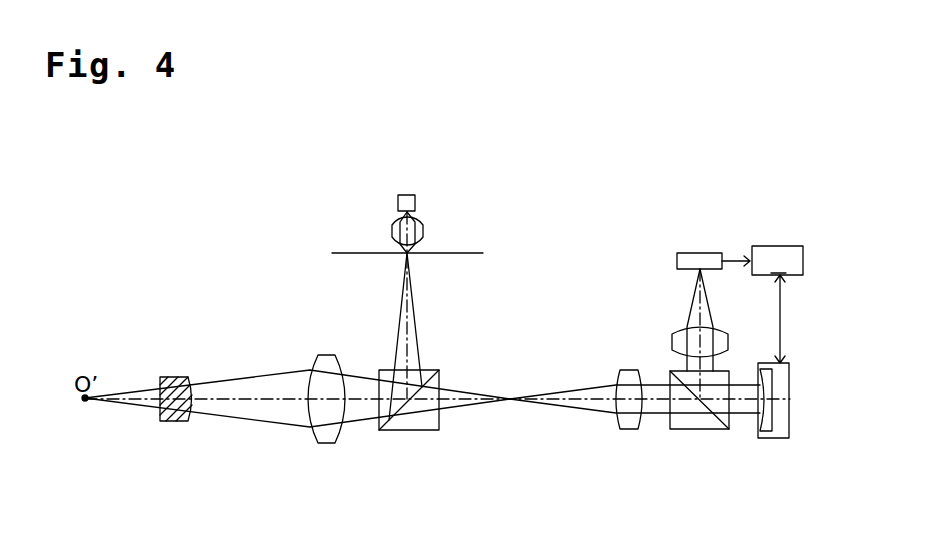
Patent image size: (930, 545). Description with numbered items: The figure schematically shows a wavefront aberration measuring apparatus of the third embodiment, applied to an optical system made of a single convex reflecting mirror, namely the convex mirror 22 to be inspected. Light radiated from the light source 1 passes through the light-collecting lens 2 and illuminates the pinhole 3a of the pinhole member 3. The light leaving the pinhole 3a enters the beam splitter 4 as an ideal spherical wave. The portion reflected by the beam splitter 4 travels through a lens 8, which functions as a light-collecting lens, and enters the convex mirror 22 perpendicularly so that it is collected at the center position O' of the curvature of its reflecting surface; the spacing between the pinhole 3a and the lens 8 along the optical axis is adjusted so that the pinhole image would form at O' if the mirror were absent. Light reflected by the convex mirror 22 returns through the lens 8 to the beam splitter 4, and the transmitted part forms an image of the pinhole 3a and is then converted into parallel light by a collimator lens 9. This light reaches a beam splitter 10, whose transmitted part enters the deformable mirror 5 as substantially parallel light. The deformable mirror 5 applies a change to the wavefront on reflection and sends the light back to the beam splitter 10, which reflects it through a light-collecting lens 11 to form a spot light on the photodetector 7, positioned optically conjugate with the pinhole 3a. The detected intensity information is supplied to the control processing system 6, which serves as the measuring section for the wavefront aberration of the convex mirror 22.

The light source 1 is at (397, 202).
The light-collecting lens 2 is at (416, 231).
The pinhole member 3 is at (367, 252).
The pinhole 3a is at (409, 257).
The beam splitter 4 is at (388, 374).
The deformable mirror 5 is at (777, 438).
The control processing system 6 is at (777, 304).
The photodetector 7 is at (678, 262).
The lens 8 is at (330, 360).
The collimator lens 9 is at (628, 428).
The beam splitter 10 is at (697, 423).
The light-collecting lens 11 is at (678, 343).
The convex mirror to be inspected 22 is at (177, 377).